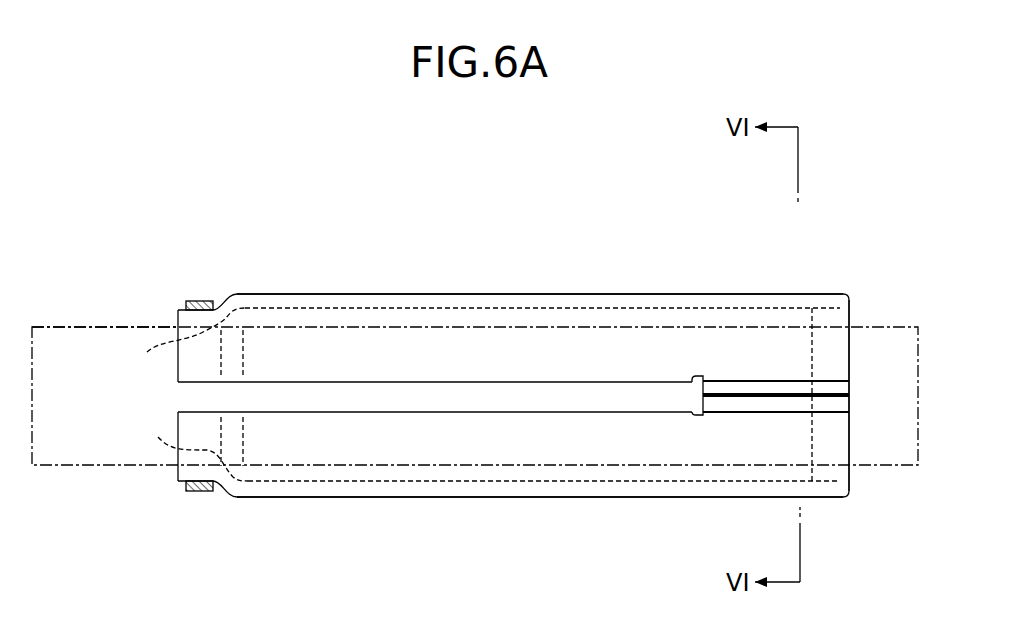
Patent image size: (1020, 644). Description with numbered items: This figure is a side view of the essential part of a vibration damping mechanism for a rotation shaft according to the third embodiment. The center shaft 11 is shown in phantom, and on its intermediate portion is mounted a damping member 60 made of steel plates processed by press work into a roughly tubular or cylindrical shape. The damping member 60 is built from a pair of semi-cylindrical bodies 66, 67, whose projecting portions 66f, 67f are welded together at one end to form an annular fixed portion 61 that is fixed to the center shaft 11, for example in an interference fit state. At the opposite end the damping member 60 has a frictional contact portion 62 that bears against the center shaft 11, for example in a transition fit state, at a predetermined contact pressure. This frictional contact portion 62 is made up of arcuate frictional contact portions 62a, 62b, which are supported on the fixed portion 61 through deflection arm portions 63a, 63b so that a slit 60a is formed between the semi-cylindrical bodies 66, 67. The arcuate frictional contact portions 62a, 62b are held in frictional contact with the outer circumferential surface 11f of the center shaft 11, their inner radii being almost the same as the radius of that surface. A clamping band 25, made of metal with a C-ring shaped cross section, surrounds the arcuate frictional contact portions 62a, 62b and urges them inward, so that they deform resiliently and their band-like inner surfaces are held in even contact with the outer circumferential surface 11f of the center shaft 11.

The center shaft 11 is at (885, 467).
The outer circumferential surface of the center shaft 11f is at (150, 322).
The clamping band 25 is at (200, 299).
The damping member 60 is at (702, 230).
The slit 60a is at (382, 383).
The fixed portion 61 is at (843, 310).
The frictional contact portion 62 is at (184, 322).
The arcuate frictional contact portion 62a is at (180, 346).
The arcuate frictional contact portion 62b is at (186, 444).
The deflection arm portion 63a is at (605, 305).
The deflection arm portion 63b is at (568, 482).
The semi-cylindrical body 66 is at (412, 325).
The projecting portion 66f is at (755, 388).
The semi-cylindrical body 67 is at (393, 473).
The projecting portion 67f is at (781, 405).